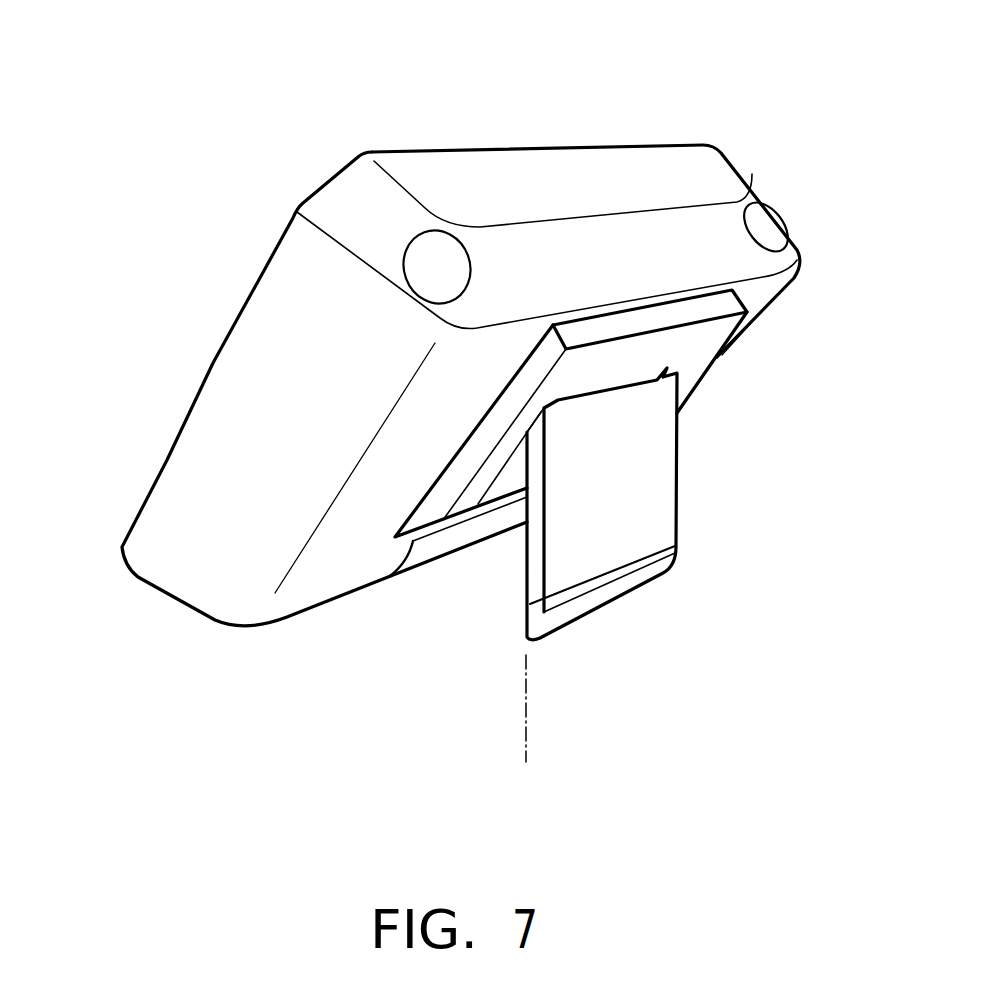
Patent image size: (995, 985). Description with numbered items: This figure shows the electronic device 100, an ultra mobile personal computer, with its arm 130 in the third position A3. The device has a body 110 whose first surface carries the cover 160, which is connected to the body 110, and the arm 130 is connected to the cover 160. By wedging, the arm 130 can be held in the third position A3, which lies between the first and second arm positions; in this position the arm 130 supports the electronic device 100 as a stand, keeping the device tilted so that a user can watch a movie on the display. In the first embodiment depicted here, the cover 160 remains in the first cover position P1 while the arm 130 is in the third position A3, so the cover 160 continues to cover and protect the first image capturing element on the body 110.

The electronic device 100 is at (155, 44).
The body 110 is at (212, 362).
The arm 130 is at (668, 480).
The cover 160 is at (690, 358).
The first cover position P1 is at (755, 287).
The third position A3 is at (523, 726).